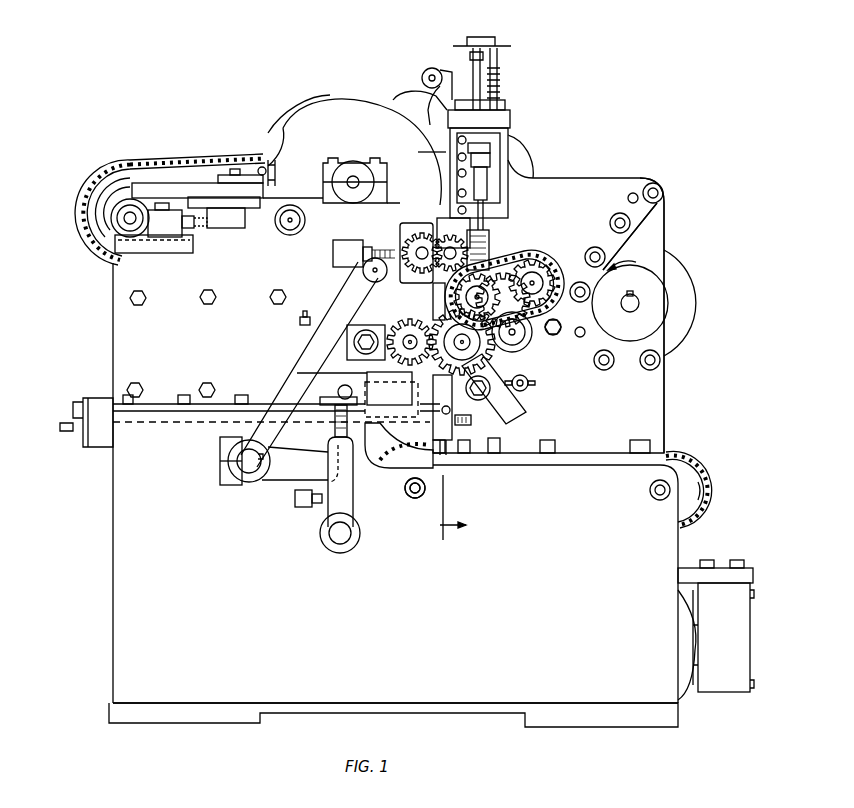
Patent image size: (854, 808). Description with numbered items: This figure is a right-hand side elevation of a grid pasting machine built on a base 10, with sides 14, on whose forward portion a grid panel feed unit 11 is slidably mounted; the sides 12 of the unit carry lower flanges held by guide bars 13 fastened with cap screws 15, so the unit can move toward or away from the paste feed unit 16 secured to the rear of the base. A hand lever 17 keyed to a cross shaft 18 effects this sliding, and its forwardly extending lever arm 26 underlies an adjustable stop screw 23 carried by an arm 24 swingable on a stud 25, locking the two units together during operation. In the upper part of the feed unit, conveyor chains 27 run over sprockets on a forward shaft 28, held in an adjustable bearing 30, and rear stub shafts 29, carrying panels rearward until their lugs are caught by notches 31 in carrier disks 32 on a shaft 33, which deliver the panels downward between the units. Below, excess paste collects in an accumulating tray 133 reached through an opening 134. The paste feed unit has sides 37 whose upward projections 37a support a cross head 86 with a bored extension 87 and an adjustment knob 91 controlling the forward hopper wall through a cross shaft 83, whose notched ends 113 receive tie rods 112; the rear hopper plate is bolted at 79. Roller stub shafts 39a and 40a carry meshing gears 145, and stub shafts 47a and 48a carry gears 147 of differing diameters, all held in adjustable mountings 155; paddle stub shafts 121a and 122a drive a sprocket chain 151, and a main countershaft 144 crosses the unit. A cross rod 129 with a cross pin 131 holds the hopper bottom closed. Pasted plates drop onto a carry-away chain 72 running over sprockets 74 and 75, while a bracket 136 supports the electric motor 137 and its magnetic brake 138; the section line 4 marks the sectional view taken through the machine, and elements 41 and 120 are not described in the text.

The base 10 is at (108, 650).
The grid panel feed unit 11 is at (112, 330).
The sides of the unit 12 is at (400, 341).
The guide bars 13 is at (158, 410).
The sides of the base 14 is at (395, 667).
The cap screws 15 is at (136, 396).
The paste feed unit 16 is at (668, 248).
The hand lever 17 is at (282, 372).
The cross shaft 18 is at (245, 470).
The adjustable stop screw 23 is at (334, 425).
The arm 24 is at (332, 505).
The stud 25 is at (340, 540).
The lever arm 26 is at (272, 483).
The conveyor chains 27 is at (122, 165).
The front sprocket carrying shaft 28 is at (112, 247).
The rear stub shafts 29 is at (285, 232).
The adjustable bearing 30 is at (136, 218).
The notches 31 is at (283, 128).
The transfer or carrier disks 32 is at (352, 100).
The shaft 33 is at (353, 176).
The sides of the paste feed unit 37 is at (620, 400).
The upward projections 37a is at (508, 134).
The stub shaft 39a is at (390, 278).
The stub shaft 40a is at (478, 248).
The gear housing 41 is at (400, 234).
The stub shaft 47a is at (391, 394).
The stub shaft 48a is at (526, 380).
The carry-away conveyor chain 72 is at (679, 455).
The sprocket 74 is at (405, 470).
The sprocket 75 is at (704, 484).
The bolts 79 is at (606, 262).
The cross shaft 83 is at (492, 160).
The cross head 86 is at (512, 116).
The vertically bored extension 87 is at (500, 90).
The adjustment knob 91 is at (500, 46).
The tie rods 112 is at (512, 176).
The end opening notches 113 is at (490, 148).
The pinion gear 120 is at (470, 250).
The stub shaft 121a is at (490, 288).
The stub shaft 122a is at (566, 290).
The cross rod 129 is at (528, 382).
The cross pin 131 is at (535, 385).
The accumulating tray 133 is at (388, 436).
The opening 134 is at (315, 358).
The bracket 136 is at (688, 566).
The electric motor 137 is at (680, 700).
The magnetic brake 138 is at (723, 637).
The main countershaft 144 is at (640, 303).
The meshing gears 145 is at (452, 243).
The meshing gears 147 is at (420, 328).
The sprocket chain 151 is at (538, 270).
The adjustable mounting 155 is at (348, 330).
The section line 4- 4 is at (434, 344).